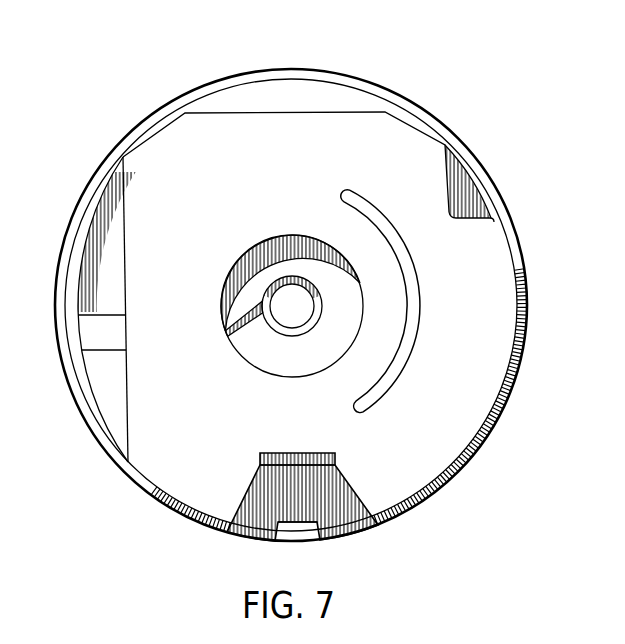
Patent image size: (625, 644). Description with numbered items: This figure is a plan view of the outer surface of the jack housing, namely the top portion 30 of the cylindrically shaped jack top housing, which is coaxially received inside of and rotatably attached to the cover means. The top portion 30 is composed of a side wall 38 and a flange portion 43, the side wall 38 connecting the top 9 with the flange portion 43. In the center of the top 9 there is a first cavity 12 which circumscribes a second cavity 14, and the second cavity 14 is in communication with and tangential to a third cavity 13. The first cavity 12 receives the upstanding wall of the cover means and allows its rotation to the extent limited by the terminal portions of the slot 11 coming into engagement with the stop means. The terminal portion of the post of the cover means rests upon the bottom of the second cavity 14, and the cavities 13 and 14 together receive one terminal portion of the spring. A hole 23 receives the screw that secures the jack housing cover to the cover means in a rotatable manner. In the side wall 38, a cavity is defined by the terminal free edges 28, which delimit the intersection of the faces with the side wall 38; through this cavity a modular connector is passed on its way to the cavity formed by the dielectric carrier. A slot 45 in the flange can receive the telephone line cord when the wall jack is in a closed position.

The top portion 30 is at (498, 110).
The side wall 38 is at (285, 113).
The top 9 is at (189, 224).
The flange portion 43 is at (118, 311).
The first cavity 12 is at (285, 371).
The third cavity 13 is at (243, 333).
The hole 23 is at (291, 300).
The second cavity 14 is at (319, 317).
The slot 11 is at (398, 404).
The free edges 28 is at (297, 452).
The slot 45 is at (318, 540).